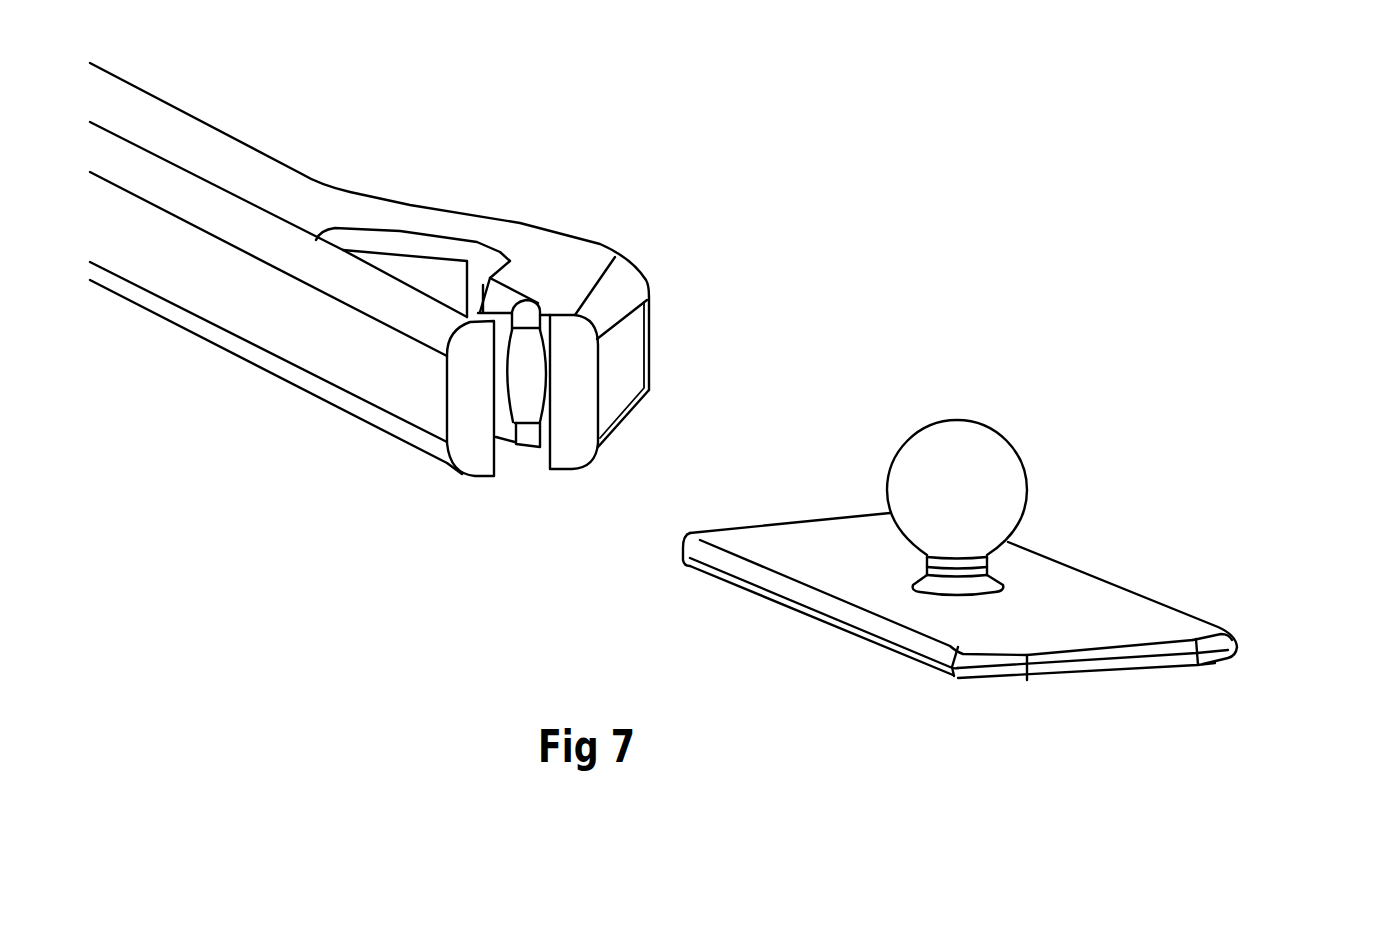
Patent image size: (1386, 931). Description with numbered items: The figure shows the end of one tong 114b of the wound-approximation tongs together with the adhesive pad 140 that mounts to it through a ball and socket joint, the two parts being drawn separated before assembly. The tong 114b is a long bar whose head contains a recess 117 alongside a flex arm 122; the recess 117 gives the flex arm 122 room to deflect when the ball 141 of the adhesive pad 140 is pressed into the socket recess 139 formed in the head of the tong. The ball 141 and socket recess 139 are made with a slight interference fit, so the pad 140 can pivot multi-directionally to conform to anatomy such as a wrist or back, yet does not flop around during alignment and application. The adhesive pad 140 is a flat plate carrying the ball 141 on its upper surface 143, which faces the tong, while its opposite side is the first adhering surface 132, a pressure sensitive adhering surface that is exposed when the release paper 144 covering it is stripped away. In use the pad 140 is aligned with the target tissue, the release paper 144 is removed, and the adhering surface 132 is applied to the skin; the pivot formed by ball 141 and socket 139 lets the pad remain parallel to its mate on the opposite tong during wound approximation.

The tong 114b is at (367, 315).
The recess 117 is at (420, 281).
The flex arm 122 is at (373, 378).
The socket recess 139 is at (567, 433).
The adhesive pad 140 is at (1023, 576).
The ball 141 is at (993, 497).
The plate top surface 143 is at (1048, 608).
The release paper 144 is at (907, 660).
The first adhering surface 132 is at (1072, 680).